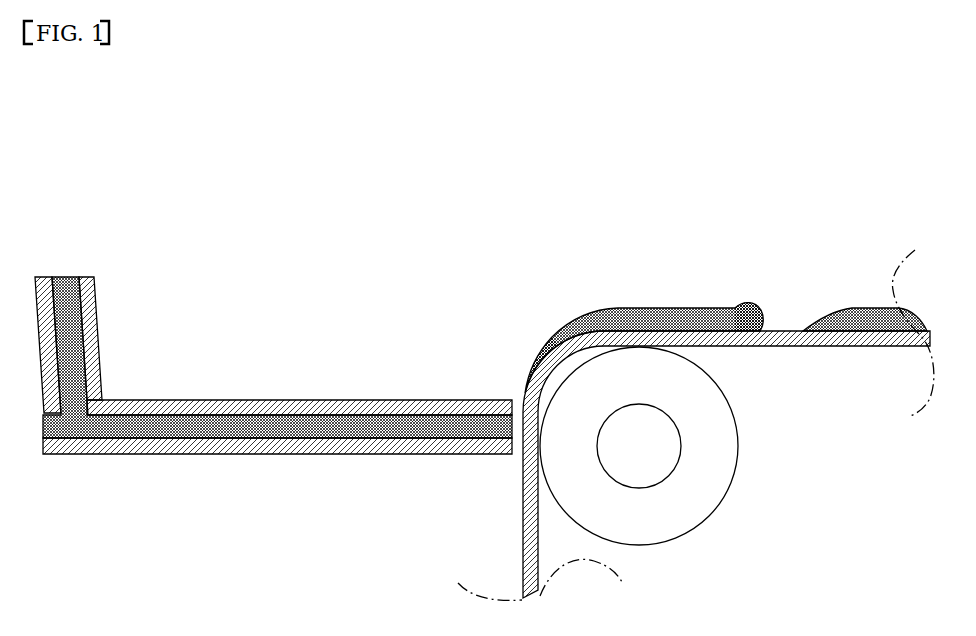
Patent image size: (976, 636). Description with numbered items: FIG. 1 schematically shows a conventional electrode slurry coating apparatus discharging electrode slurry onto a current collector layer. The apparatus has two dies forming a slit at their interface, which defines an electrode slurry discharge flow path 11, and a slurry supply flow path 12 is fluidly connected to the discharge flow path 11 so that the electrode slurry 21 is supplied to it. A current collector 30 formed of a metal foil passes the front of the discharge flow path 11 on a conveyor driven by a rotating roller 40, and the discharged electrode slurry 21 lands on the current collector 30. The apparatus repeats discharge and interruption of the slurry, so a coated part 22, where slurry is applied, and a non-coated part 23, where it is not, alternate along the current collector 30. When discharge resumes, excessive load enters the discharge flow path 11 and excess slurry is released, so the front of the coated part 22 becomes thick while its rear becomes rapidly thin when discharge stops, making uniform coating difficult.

The electrode slurry discharge flow path 11 is at (457, 454).
The slurry supply flow path 12 is at (98, 325).
The electrode slurry 21 is at (137, 430).
The coated part 22 is at (635, 308).
The non-coated part 23 is at (787, 312).
The current collector 30 is at (745, 347).
The rotating roller 40 is at (738, 468).